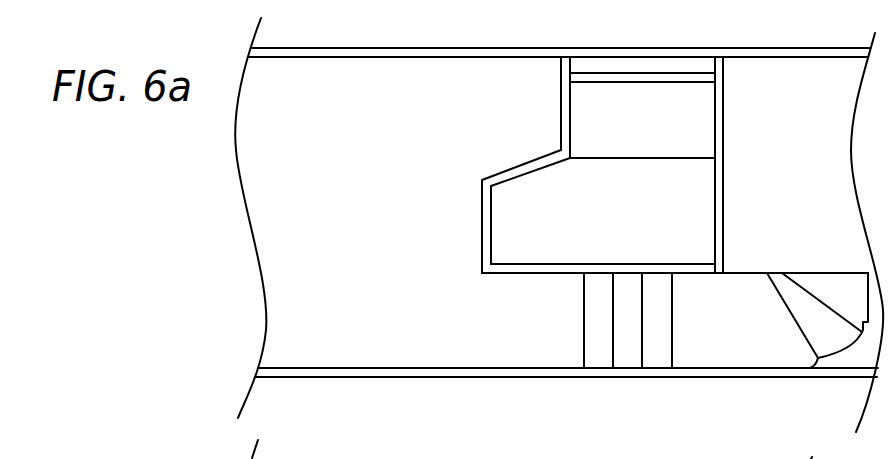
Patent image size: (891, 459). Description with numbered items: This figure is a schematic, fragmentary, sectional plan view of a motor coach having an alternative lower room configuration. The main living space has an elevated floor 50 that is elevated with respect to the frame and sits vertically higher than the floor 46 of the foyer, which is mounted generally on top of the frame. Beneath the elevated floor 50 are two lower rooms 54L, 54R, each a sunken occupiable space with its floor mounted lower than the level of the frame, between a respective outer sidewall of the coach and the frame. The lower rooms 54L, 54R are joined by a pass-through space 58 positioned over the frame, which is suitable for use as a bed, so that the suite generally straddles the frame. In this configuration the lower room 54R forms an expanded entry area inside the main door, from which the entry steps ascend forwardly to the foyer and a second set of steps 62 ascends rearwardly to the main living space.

The elevated floor 50 is at (390, 227).
The floor 46 is at (800, 187).
The lower room 54L is at (648, 130).
The lower room 54R is at (740, 333).
The pass-through space 58 is at (605, 222).
The second set of steps 62 is at (597, 360).